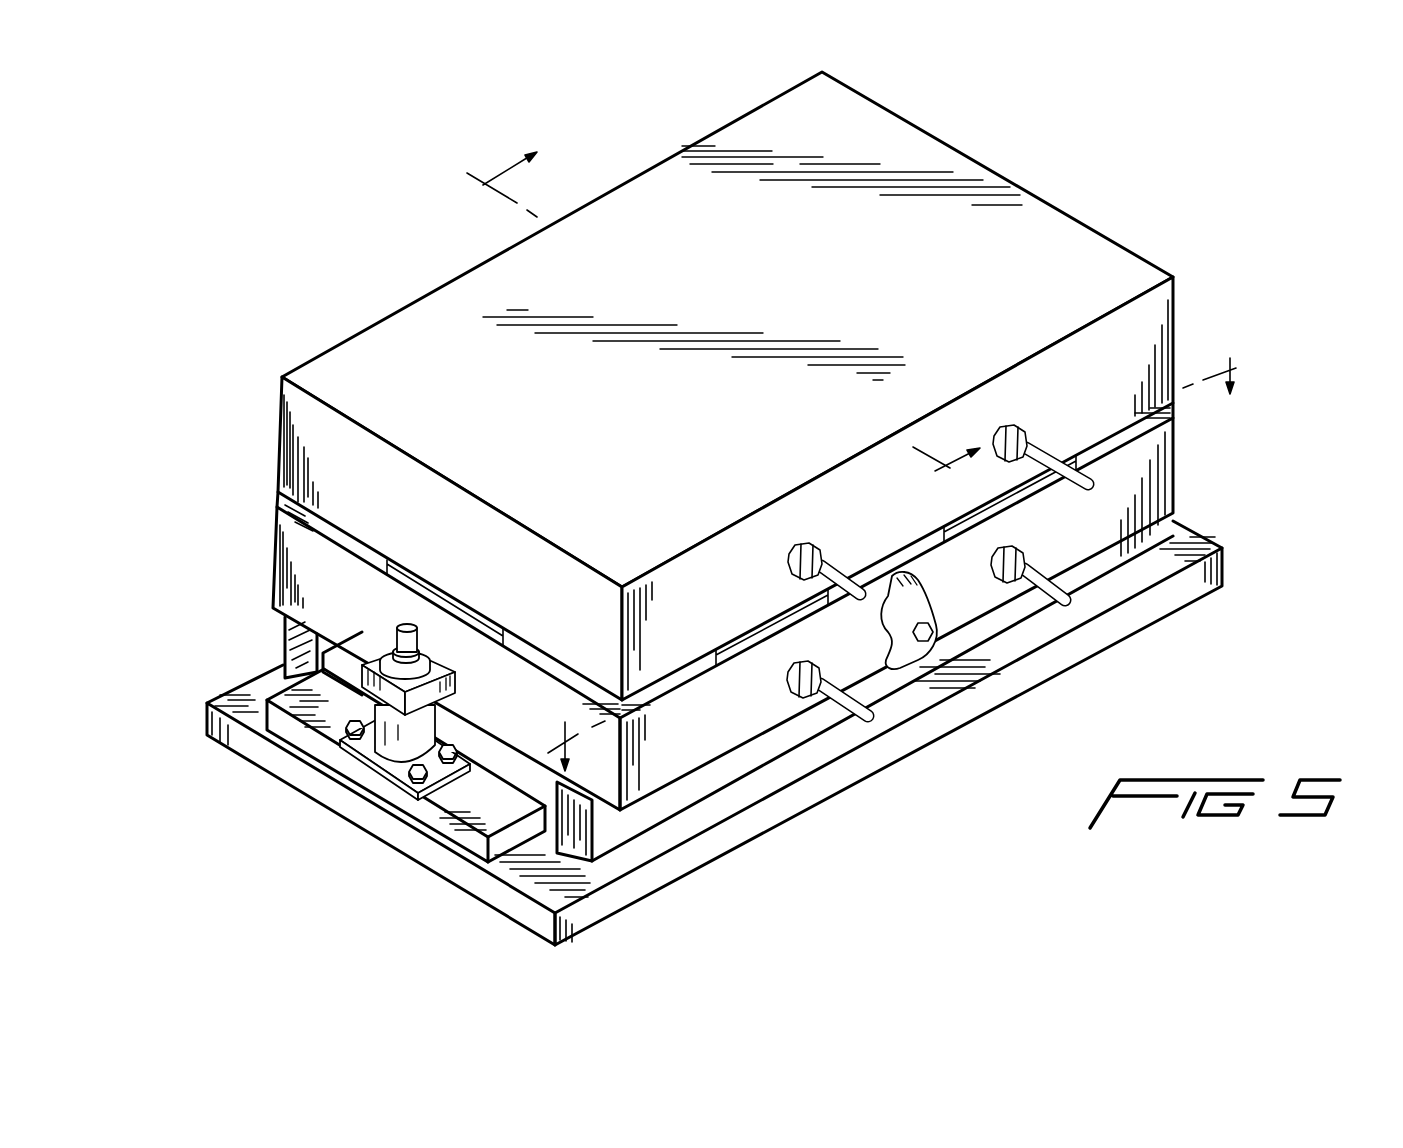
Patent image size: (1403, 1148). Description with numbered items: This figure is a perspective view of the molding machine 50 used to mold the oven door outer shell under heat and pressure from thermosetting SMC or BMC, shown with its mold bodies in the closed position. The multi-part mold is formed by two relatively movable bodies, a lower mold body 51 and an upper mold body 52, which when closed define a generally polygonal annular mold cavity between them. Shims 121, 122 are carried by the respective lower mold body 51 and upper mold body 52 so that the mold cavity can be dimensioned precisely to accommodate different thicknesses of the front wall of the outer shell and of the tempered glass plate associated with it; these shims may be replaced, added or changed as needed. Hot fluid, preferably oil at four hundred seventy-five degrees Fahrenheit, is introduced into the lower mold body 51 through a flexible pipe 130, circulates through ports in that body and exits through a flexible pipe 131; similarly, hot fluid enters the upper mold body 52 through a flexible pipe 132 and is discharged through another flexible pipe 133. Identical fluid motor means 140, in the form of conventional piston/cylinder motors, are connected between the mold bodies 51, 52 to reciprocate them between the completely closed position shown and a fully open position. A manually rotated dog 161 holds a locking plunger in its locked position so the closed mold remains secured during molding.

The molding machine 50 is at (729, 508).
The lower mold body 51 is at (1200, 523).
The upper mold body 52 is at (1026, 187).
The shim 121 is at (398, 582).
The shim 122 is at (440, 595).
The flexible pipe 130 is at (832, 683).
The flexible pipe 131 is at (1033, 563).
The flexible pipe 132 is at (838, 568).
The flexible pipe 133 is at (1040, 446).
The fluid motor means 140 is at (462, 684).
The manually rotated dog 161 is at (937, 597).